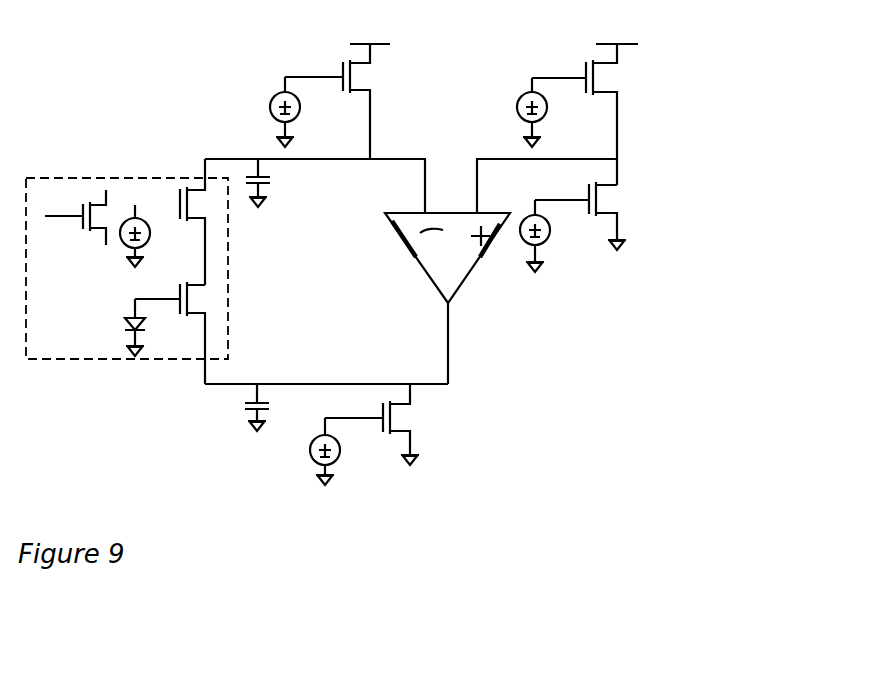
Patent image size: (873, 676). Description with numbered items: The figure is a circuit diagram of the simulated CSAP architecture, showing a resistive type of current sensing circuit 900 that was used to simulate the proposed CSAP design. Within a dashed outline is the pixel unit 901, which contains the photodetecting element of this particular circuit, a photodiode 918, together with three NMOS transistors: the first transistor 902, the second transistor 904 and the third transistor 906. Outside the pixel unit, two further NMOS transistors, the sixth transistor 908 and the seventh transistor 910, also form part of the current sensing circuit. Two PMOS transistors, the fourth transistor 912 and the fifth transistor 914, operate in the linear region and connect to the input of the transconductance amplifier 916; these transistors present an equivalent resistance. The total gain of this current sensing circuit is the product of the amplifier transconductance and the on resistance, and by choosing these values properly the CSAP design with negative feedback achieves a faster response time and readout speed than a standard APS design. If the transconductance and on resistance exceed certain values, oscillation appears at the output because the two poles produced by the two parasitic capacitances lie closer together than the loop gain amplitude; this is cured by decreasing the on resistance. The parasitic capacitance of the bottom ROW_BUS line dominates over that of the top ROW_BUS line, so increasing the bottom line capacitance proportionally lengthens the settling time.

The current sensing circuit 900 is at (815, 601).
The pixel unit 901 is at (92, 143).
The transistor Q1 902 is at (100, 256).
The transistor Q2 904 is at (193, 188).
The transistor Q3 906 is at (195, 320).
The transistor Q6 908 is at (724, 164).
The transistor Q7 910 is at (508, 392).
The transistor Q4 912 is at (464, 52).
The transistor Q5 914 is at (724, 70).
The transconductance amplifier 916 is at (414, 258).
The photodiode 918 is at (116, 340).